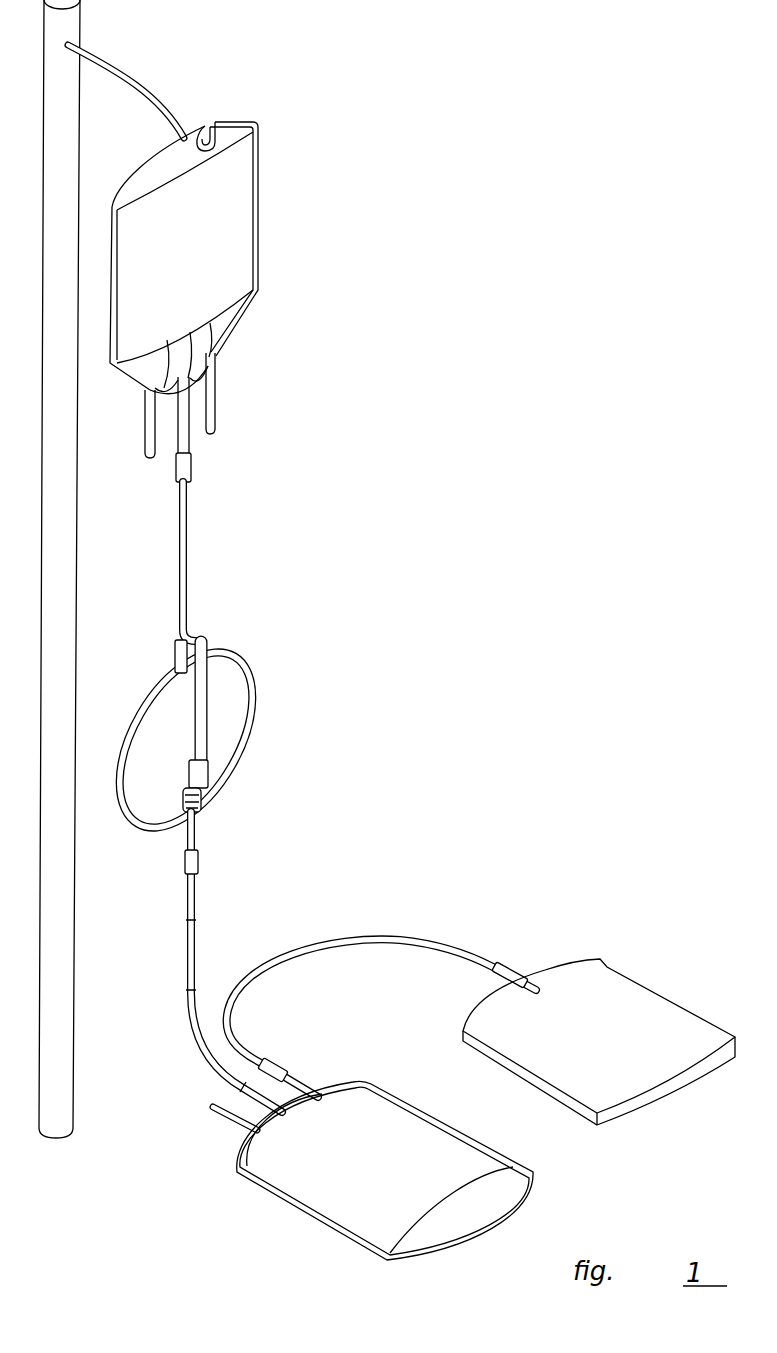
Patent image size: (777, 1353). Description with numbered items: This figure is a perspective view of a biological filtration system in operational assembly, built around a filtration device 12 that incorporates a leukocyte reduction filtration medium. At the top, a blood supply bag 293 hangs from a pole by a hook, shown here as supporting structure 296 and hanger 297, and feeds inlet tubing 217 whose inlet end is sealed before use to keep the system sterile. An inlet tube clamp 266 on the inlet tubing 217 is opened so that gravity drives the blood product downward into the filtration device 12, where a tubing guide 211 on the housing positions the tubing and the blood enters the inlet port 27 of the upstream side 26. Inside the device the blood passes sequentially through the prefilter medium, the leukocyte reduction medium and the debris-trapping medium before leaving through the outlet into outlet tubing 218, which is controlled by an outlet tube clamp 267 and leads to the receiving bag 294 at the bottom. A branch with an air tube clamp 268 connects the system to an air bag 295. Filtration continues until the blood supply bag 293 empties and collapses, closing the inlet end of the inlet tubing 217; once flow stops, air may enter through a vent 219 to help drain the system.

The filtration device 12 is at (252, 663).
The upstream side 26 is at (224, 710).
The inlet port 27 is at (212, 755).
The tubing guide 211 is at (190, 630).
The inlet tubing 217 is at (188, 550).
The outlet tubing 218 is at (197, 920).
The vent 219 is at (192, 799).
The inlet tube clamp 266 is at (190, 465).
The outlet tube clamp 267 is at (199, 858).
The air tube clamp 268 is at (283, 1062).
The blood supply bag 293 is at (233, 220).
The receiving bag 294 is at (333, 1180).
The air bag 295 is at (608, 975).
The pole 296 is at (63, 940).
The hook 297 is at (127, 72).